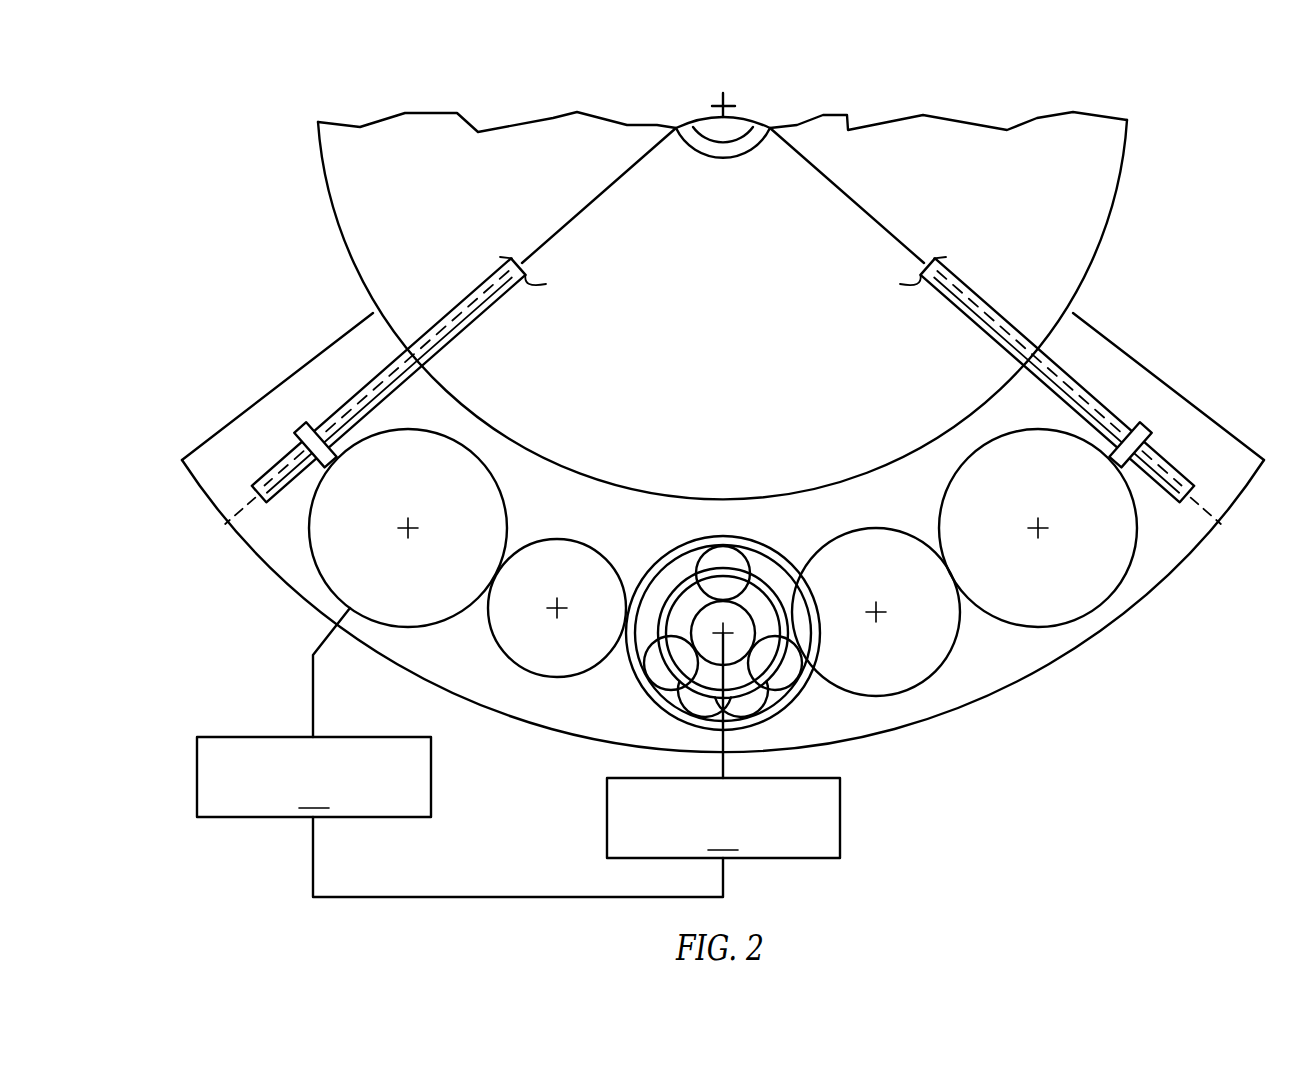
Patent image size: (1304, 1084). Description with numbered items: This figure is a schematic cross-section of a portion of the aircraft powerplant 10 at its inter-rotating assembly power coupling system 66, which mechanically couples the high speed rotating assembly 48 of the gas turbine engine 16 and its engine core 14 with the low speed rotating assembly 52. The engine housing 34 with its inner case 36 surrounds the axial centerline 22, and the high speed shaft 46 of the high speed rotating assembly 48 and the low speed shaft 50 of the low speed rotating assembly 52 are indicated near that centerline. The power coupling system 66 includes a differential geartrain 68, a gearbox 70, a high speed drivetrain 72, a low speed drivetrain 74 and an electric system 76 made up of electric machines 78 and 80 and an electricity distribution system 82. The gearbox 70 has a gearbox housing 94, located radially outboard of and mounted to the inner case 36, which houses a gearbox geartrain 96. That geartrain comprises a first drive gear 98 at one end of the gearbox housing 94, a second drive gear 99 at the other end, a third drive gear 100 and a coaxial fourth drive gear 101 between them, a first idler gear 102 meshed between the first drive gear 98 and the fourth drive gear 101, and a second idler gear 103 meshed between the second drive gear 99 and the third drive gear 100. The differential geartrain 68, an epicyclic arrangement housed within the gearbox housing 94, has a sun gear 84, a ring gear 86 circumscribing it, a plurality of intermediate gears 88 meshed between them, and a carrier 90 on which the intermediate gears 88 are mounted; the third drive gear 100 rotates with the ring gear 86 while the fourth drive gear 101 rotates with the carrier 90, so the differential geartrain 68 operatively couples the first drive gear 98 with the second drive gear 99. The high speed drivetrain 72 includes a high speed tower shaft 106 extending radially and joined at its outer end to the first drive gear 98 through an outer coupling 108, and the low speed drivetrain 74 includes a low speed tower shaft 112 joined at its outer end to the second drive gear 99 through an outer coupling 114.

The aircraft powerplant 10 is at (1243, 75).
The engine core 14 is at (1243, 75).
The gas turbine engine 16 is at (1201, 112).
The axial centerline 22 is at (728, 104).
The engine housing 34 is at (795, 305).
The inner case 36 is at (1140, 173).
The high speed shaft 46 is at (730, 188).
The high speed rotating assembly 48 is at (735, 169).
The low speed shaft 50 is at (698, 175).
The low speed rotating assembly 52 is at (705, 148).
The inter-rotating assembly power coupling system 66 is at (266, 362).
The differential geartrain 68 is at (700, 596).
The gearbox 70 is at (318, 341).
The high speed drivetrain 72 is at (1007, 326).
The low speed drivetrain 74 is at (436, 326).
The electric system 76 is at (785, 748).
The electric machine 78 is at (723, 818).
The electric machine 80 is at (314, 712).
The electricity distribution system 82 is at (483, 897).
The sun gear 84 is at (800, 660).
The ring gear 86 is at (672, 550).
The intermediate gears 88 is at (697, 557).
The carrier 90 is at (675, 592).
The gearbox housing 94 is at (701, 532).
The gearbox geartrain 96 is at (272, 543).
The first drive gear 98 is at (1093, 612).
The second drive gear 99 is at (315, 563).
The third drive gear 100 is at (630, 682).
The fourth drive gear 101 is at (740, 723).
The first idler gear 102 is at (912, 692).
The second idler gear 103 is at (525, 672).
The high speed tower shaft 106 is at (960, 316).
The outer coupling 108 is at (1159, 438).
The low speed tower shaft 112 is at (486, 316).
The outer coupling 114 is at (287, 437).